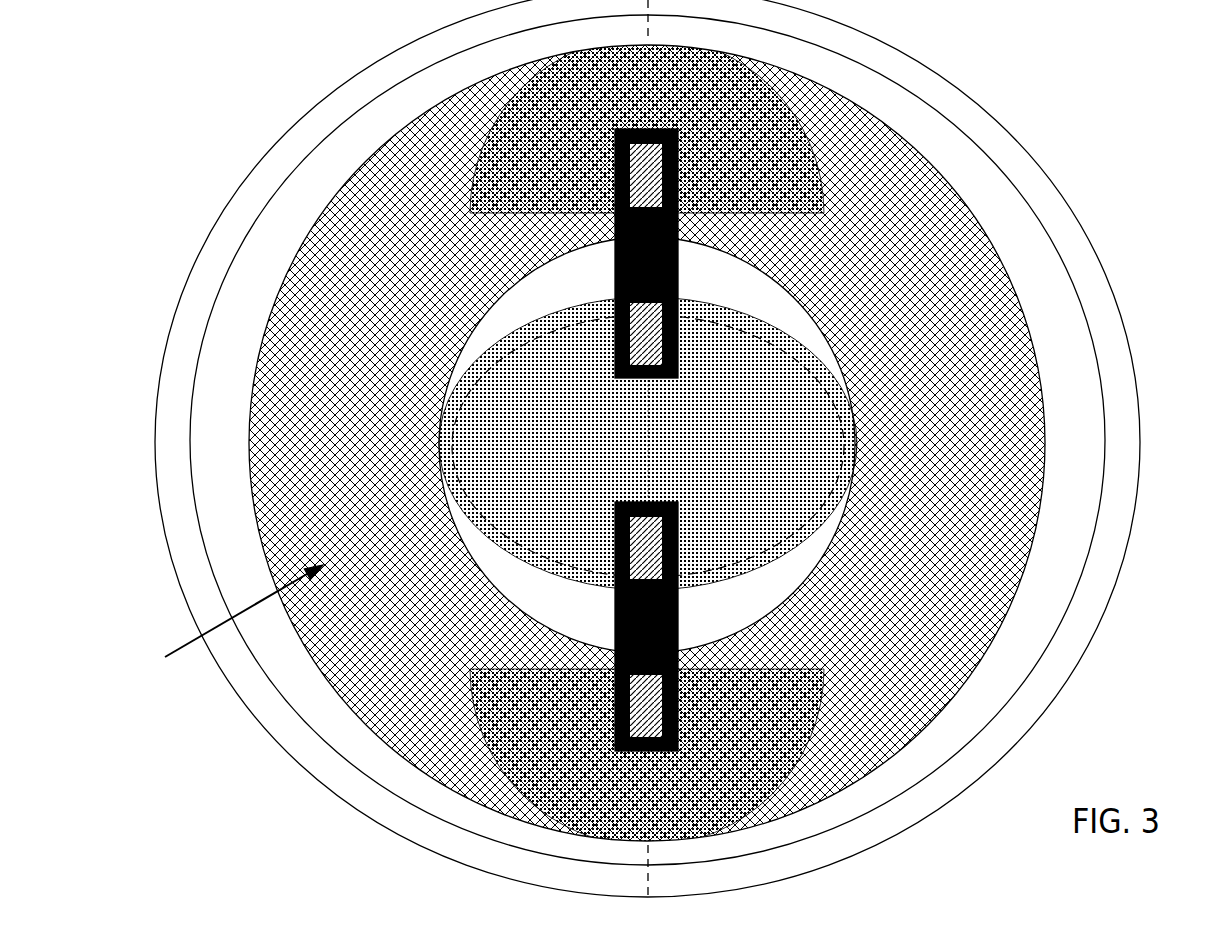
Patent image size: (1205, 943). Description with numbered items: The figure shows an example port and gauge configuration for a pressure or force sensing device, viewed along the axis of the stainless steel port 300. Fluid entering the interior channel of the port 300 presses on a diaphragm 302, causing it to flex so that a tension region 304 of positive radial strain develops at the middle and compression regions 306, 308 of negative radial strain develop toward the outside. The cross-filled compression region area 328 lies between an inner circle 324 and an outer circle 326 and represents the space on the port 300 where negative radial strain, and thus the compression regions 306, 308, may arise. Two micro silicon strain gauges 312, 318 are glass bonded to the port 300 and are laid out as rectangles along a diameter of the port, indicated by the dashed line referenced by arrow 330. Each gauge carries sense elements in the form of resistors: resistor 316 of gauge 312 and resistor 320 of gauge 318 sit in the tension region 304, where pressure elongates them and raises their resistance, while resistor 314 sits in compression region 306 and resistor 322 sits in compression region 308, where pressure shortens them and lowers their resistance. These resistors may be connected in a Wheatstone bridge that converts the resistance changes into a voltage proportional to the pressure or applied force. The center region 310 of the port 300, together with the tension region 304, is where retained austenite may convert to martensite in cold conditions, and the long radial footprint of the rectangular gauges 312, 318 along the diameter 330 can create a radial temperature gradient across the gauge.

The port 300 is at (242, 140).
The diaphragm 302 is at (940, 111).
The tension region 304 is at (707, 588).
The compression region 306 is at (525, 90).
The compression region 308 is at (483, 737).
The center region 310 is at (460, 471).
The micro silicon strain gauge 312 is at (683, 258).
The resistor 314 is at (674, 172).
The resistor 316 is at (676, 344).
The micro silicon strain gauge 318 is at (649, 643).
The resistor 320 is at (676, 554).
The resistor 322 is at (674, 728).
The circle 324 is at (530, 268).
The circle 326 is at (278, 292).
The compression region area 328 is at (221, 623).
The arrow 330 is at (671, 442).